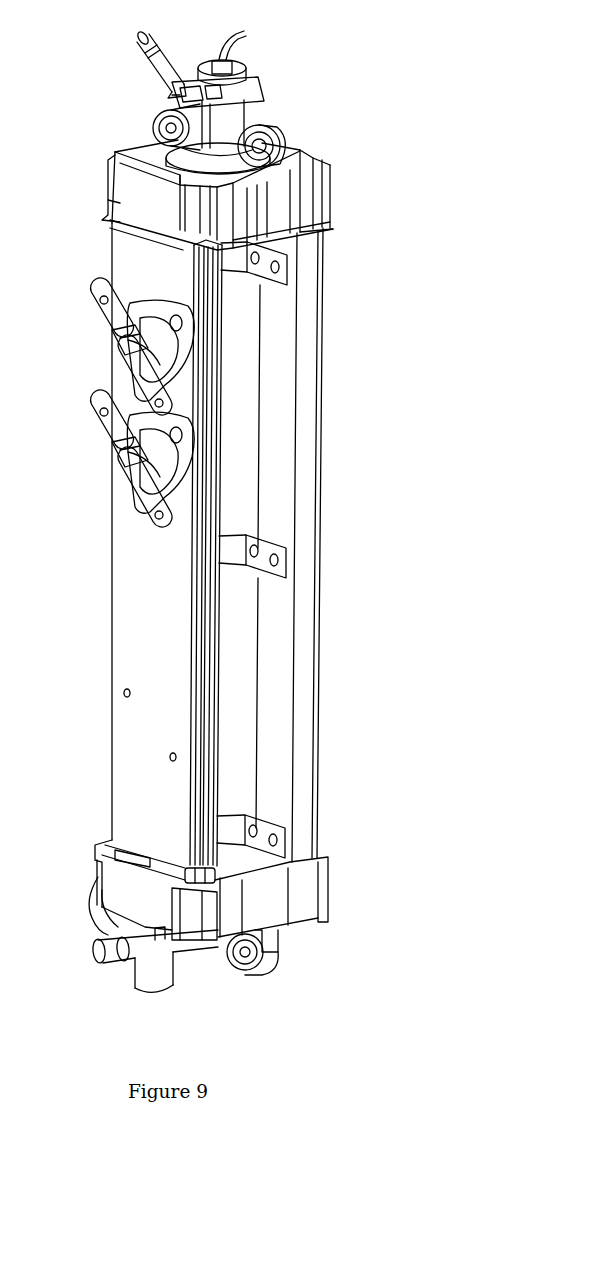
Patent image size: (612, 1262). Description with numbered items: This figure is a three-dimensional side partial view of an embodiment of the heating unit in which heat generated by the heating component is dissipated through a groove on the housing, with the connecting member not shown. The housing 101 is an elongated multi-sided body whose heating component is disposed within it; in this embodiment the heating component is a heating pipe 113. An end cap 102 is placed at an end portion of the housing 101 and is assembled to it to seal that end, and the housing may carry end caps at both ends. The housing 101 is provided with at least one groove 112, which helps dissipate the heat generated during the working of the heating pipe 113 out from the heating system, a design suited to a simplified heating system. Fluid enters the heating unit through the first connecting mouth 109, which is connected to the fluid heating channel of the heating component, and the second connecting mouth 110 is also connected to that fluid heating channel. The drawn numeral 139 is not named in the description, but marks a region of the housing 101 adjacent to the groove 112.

The first connecting mouth 109 is at (142, 37).
The housing 101 is at (112, 178).
The end cap 102 is at (133, 581).
The channel 139 is at (242, 353).
The heating pipe 113 is at (238, 402).
The groove 112 is at (285, 473).
The second connecting mouth 110 is at (135, 977).